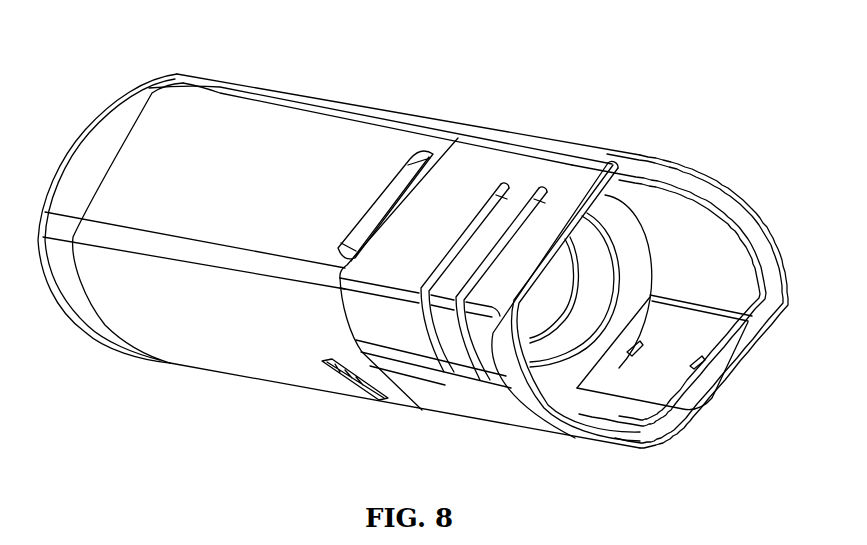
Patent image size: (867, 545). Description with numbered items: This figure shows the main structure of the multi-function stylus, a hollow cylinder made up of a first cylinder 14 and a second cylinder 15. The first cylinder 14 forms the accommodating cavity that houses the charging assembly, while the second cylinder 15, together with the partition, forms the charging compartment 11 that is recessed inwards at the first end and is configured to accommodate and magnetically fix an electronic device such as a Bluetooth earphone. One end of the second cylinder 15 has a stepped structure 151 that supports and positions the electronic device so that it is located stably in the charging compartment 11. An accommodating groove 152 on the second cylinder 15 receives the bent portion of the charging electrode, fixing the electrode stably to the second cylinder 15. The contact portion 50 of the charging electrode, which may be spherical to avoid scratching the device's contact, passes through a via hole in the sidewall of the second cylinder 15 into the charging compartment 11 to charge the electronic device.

The first cylinder 14 is at (252, 137).
The second cylinder 15 is at (522, 162).
The accommodating groove 152 is at (486, 213).
The stepped structure 151 is at (595, 255).
The charging compartment 11 is at (670, 240).
The contact portion 50 is at (693, 363).